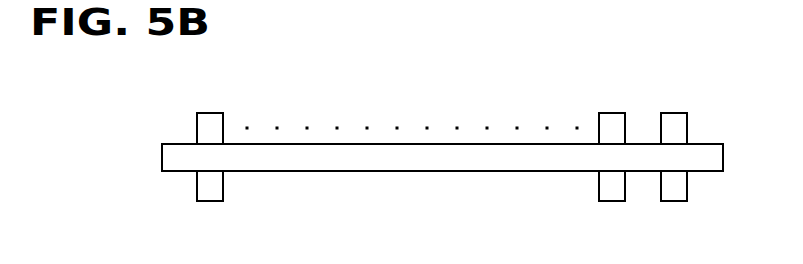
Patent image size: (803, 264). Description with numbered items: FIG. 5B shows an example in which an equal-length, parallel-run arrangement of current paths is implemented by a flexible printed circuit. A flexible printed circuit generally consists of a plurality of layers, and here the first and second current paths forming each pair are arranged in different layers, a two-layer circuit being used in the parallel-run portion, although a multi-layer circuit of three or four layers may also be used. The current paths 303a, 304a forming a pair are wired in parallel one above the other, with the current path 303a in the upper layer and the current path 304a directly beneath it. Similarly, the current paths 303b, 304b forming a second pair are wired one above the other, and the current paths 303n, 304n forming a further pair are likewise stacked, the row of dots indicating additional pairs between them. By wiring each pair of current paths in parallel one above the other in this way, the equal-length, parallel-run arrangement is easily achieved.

The current path 303n is at (211, 113).
The current path 303b is at (612, 113).
The current path 303a is at (672, 113).
The current path 304n is at (211, 201).
The current path 304b is at (612, 201).
The current path 304a is at (672, 201).